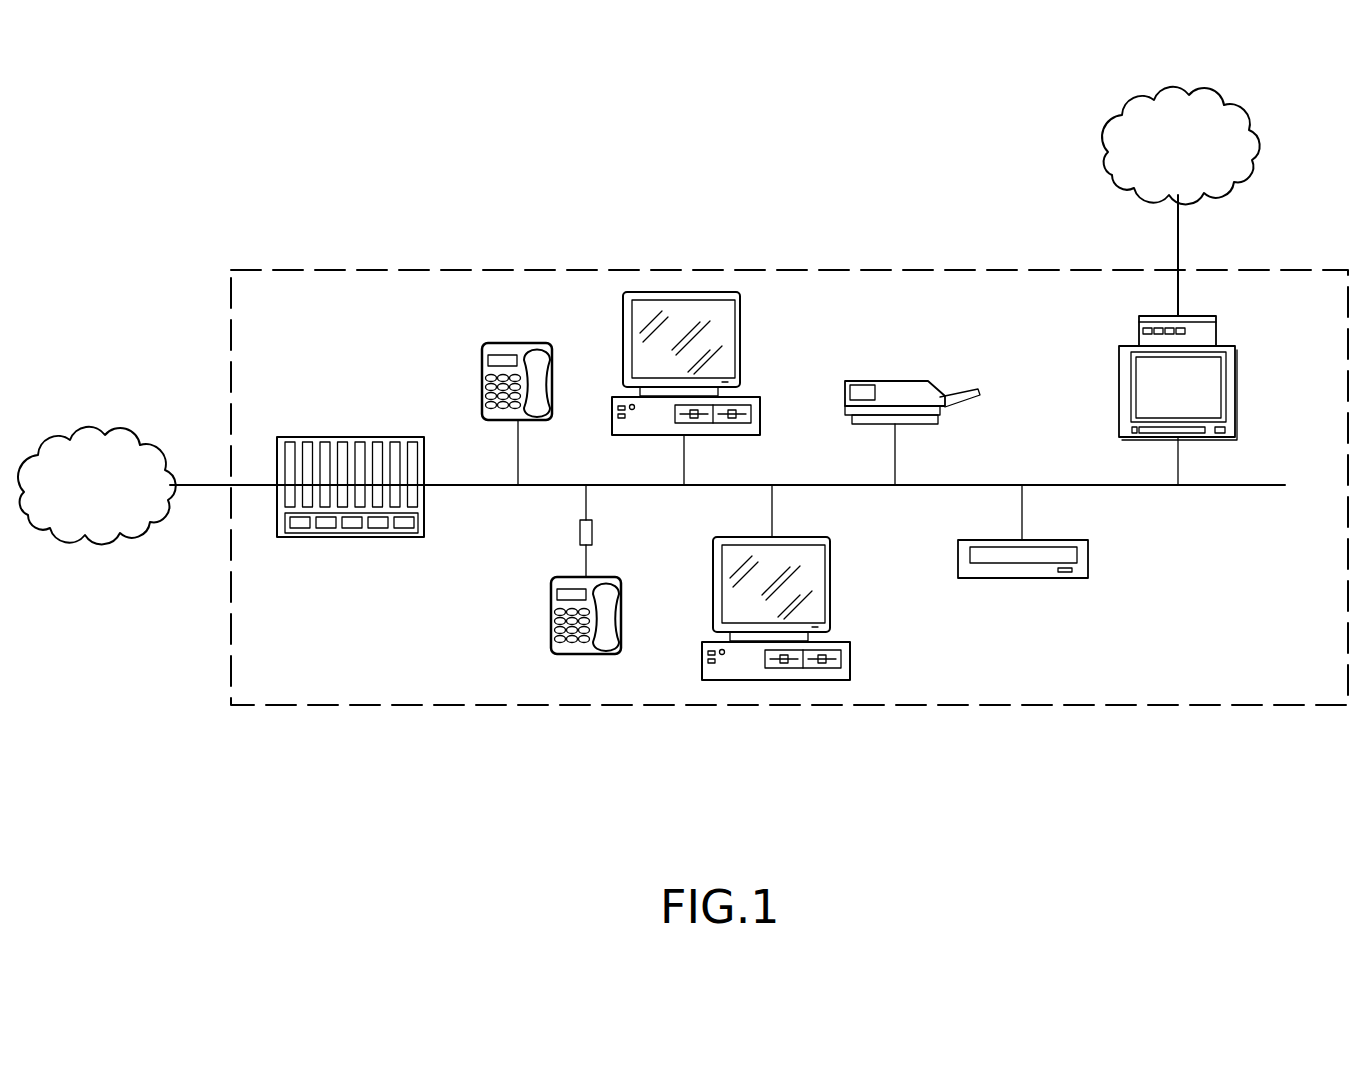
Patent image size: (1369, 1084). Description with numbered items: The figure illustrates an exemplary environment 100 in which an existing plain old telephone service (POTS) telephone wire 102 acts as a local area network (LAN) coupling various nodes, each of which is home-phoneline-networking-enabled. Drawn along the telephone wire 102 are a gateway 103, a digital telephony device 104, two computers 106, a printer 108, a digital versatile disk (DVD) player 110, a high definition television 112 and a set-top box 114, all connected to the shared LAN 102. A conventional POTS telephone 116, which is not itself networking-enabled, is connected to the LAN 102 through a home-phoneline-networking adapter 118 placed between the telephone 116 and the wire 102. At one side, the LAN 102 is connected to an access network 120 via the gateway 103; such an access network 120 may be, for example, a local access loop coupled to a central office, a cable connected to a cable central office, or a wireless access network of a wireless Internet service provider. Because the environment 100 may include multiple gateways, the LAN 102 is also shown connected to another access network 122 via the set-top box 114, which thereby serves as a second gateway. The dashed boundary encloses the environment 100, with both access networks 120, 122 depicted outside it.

The environment 100 is at (832, 270).
The plain old telephone service telephone wire 102 is at (1220, 486).
The gateway 103 is at (340, 437).
The digital telephony device 104 is at (482, 380).
The computers 106 is at (760, 418).
The printer 108 is at (890, 381).
The digital versatile disk player 110 is at (1088, 558).
The high definition television 112 is at (1237, 391).
The set-top box 114 is at (1216, 332).
The POTS telephone 116 is at (551, 617).
The home-phoneline-networking adapter 118 is at (592, 533).
The access network 120 is at (108, 435).
The access network 122 is at (1233, 108).